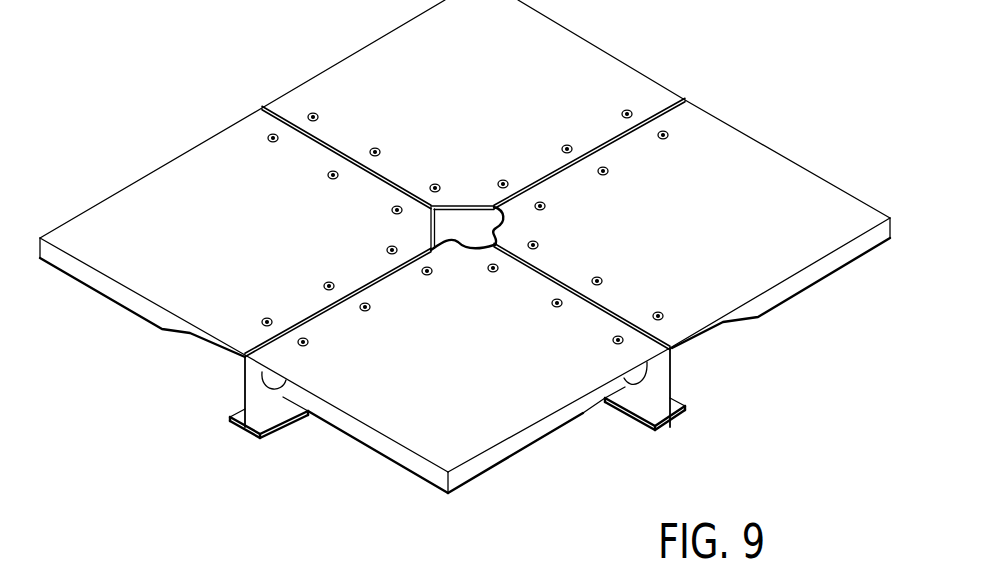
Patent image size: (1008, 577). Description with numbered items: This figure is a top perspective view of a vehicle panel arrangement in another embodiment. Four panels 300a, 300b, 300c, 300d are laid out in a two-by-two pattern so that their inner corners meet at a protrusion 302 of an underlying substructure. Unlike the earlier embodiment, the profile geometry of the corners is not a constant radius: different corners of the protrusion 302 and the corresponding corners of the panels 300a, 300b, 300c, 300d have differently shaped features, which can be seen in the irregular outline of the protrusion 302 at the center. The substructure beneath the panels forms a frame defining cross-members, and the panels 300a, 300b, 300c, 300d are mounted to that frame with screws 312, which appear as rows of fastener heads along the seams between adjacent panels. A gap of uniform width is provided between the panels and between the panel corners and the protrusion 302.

The panel 300a is at (400, 423).
The panel 300b is at (786, 170).
The panel 300c is at (572, 42).
The panel 300d is at (137, 265).
The protrusion 302 is at (463, 213).
The screws 312 is at (274, 133).